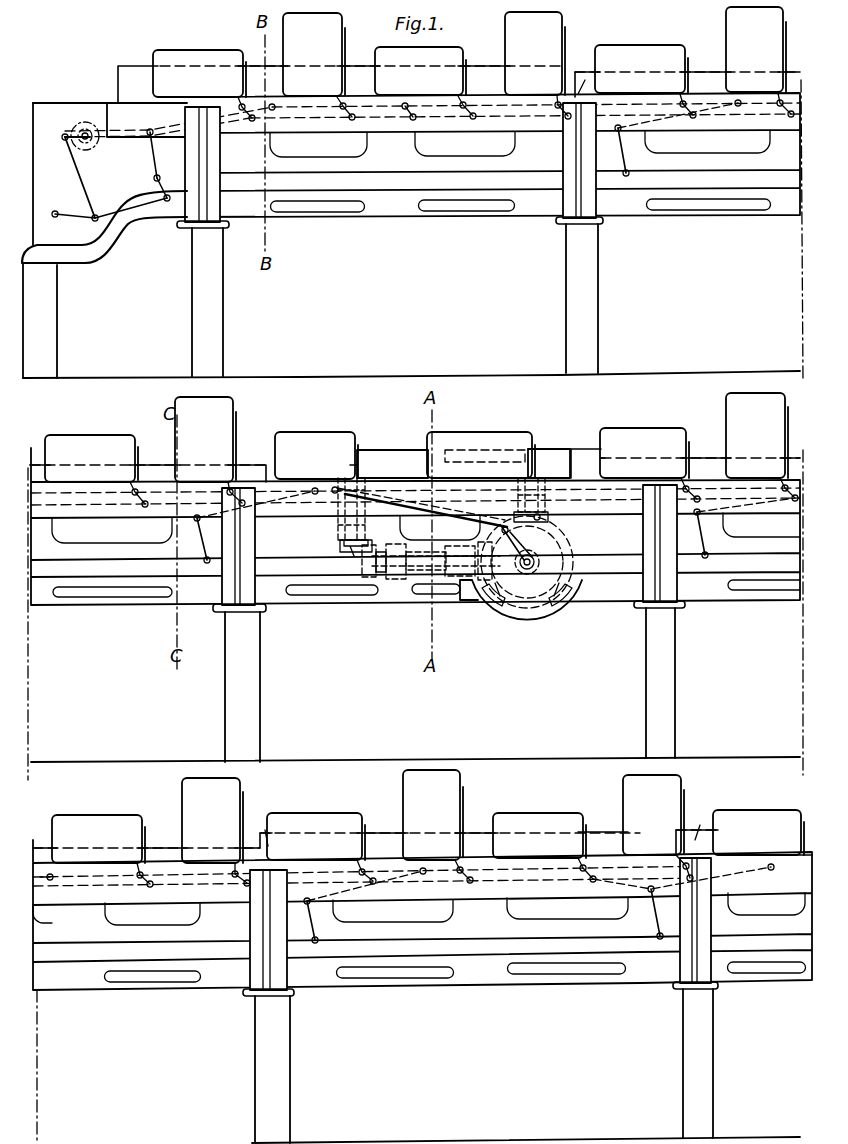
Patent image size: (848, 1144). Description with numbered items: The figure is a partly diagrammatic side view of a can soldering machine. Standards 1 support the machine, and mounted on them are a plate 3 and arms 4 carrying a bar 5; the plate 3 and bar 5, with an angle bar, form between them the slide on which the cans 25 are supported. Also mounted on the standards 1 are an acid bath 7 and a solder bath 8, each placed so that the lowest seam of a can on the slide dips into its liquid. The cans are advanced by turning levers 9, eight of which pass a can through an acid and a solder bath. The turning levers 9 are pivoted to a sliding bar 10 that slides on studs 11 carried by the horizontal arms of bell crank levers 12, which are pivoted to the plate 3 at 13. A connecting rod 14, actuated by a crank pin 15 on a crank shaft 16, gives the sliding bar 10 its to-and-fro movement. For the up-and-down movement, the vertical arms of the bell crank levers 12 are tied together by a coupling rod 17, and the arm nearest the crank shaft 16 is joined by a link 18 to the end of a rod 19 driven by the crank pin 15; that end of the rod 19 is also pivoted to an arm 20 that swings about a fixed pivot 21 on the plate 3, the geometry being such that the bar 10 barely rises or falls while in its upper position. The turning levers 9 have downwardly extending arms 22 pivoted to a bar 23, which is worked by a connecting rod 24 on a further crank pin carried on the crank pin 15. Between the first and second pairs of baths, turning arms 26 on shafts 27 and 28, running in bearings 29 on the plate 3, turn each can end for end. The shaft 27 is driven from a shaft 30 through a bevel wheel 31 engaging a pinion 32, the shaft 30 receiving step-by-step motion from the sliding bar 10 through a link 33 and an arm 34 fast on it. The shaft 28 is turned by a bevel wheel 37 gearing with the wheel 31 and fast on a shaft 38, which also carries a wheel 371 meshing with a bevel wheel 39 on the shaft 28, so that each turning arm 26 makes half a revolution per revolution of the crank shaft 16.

The standards 1 is at (205, 258).
The plate 3 is at (600, 612).
The arms 4 is at (215, 190).
The bar 5 is at (122, 105).
The acid bath 7 is at (136, 80).
The solder bath 8 is at (240, 476).
The turning levers 9 is at (240, 75).
The sliding bar 10 is at (484, 100).
The studs 11 is at (256, 125).
The bell crank levers 12 is at (162, 164).
The pivot 13 is at (147, 140).
The connecting rod 14 is at (122, 126).
The crank pin 15 is at (63, 142).
The crank shaft 16 is at (86, 150).
The coupling rod 17 is at (352, 178).
The link 18 is at (132, 224).
The rod 19 is at (84, 187).
The arm 20 is at (68, 219).
The fixed pivot 21 is at (57, 210).
The downwardly extending arms 22 is at (144, 510).
The bar 23 is at (48, 508).
The connecting rod 24 is at (80, 130).
The cans 25 is at (505, 445).
The turning arms 26 is at (344, 456).
The shaft 27 is at (530, 468).
The shaft 28 is at (360, 471).
The bearings 29 is at (368, 529).
The shaft 30 is at (527, 572).
The bevel wheel 31 is at (566, 551).
The pinion 32 is at (503, 527).
The link 33 is at (422, 515).
The arm 34 is at (502, 600).
The bevel wheel 37 is at (488, 578).
The shaft 38 is at (430, 572).
The bevel wheel 39 is at (346, 556).
The wheel 371 is at (372, 562).